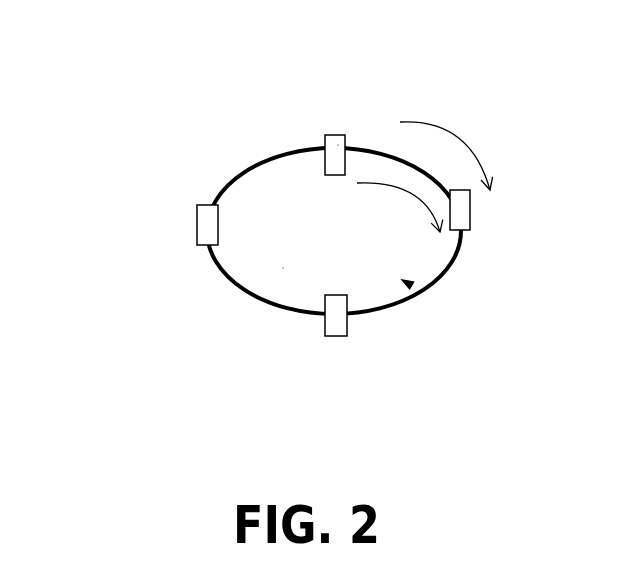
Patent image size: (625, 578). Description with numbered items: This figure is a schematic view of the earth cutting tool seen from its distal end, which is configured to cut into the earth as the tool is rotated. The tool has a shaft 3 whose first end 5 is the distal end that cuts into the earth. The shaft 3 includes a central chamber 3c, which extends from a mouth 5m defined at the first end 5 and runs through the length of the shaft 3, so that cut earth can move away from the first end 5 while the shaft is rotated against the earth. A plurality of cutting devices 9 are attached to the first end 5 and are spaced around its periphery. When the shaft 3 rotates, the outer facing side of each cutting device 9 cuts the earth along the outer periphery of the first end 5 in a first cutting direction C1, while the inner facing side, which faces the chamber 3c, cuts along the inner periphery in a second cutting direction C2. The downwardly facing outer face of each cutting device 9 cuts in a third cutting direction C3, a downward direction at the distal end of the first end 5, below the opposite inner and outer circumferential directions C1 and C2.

The shaft 3 is at (150, 212).
The central chamber 3c is at (283, 268).
The first end 5 is at (250, 163).
The mouth 5m is at (408, 284).
The cutting device 9 is at (470, 213).
The first cutting direction C1 is at (453, 132).
The second cutting direction C2 is at (410, 190).
The third cutting direction C3 is at (338, 145).